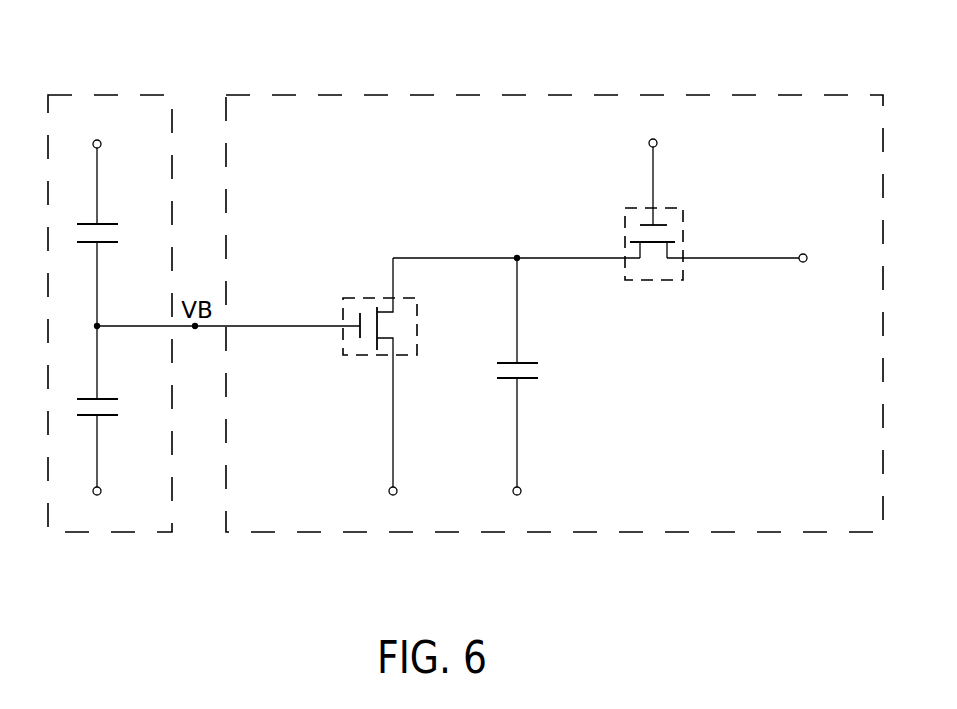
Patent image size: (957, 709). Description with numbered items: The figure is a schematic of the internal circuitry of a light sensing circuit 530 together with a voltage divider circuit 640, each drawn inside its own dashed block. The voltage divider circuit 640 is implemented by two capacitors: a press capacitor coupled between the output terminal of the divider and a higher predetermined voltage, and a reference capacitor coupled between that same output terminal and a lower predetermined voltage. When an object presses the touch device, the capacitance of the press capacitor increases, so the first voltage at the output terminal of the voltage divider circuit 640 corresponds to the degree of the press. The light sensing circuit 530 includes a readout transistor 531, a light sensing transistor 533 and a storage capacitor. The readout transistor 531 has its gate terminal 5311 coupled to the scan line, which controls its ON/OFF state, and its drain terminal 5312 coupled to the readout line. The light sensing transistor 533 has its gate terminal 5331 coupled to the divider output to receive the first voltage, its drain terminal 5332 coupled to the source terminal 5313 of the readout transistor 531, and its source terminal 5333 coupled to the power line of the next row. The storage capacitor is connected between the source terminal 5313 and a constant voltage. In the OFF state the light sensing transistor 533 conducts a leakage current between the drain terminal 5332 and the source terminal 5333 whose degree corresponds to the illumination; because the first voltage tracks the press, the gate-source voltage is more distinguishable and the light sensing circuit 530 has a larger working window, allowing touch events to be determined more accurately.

The voltage divider circuit 640 is at (100, 540).
The light sensing circuit 530 is at (554, 350).
The readout transistor 531 is at (666, 238).
The gate terminal of readout transistor 5311 is at (660, 220).
The drain terminal of readout transistor 5312 is at (675, 260).
The source terminal of readout transistor 5313 is at (632, 262).
The light sensing transistor 533 is at (380, 372).
The gate terminal of light sensing transistor 5331 is at (348, 320).
The drain terminal of light sensing transistor 5332 is at (395, 305).
The source terminal of light sensing transistor 5333 is at (395, 345).